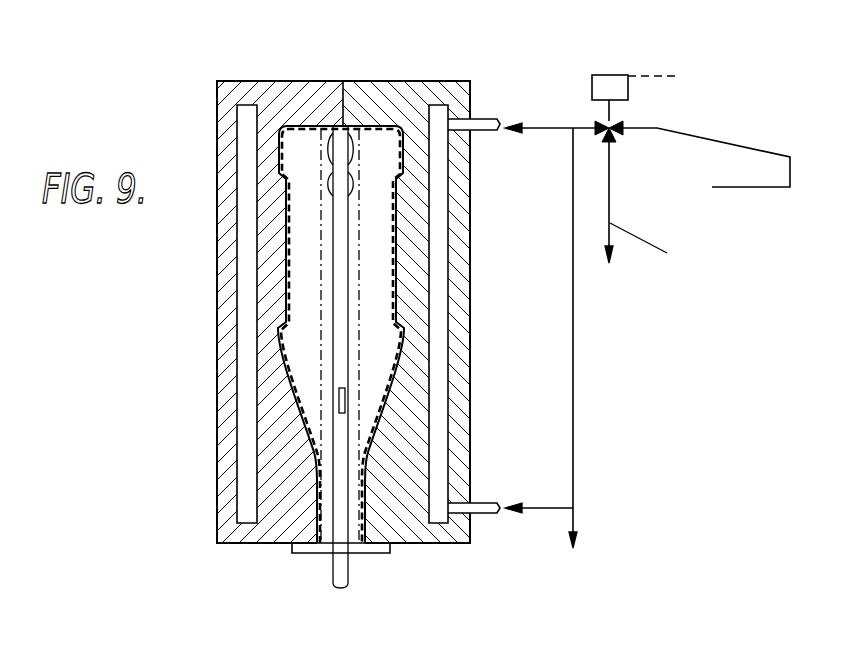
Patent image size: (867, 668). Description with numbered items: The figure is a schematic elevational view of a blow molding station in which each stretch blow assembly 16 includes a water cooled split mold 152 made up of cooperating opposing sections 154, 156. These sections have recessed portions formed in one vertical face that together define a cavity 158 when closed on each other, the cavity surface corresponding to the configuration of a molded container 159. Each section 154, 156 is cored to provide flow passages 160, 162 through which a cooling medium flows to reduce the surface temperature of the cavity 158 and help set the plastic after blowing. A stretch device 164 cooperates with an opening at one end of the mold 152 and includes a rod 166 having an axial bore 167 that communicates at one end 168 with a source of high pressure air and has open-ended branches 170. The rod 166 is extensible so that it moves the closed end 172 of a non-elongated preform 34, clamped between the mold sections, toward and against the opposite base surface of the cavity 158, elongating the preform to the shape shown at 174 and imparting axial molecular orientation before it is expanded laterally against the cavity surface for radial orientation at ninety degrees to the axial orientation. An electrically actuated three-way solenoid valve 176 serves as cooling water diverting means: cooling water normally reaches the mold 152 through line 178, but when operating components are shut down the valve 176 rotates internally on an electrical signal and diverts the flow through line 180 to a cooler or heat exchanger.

The stretch blow assembly 16 is at (150, 360).
The non-elongated preform 34 is at (350, 457).
The water cooled split mold 152 is at (255, 74).
The mold section 154 is at (286, 87).
The mold section 156 is at (392, 86).
The cavity 158 is at (405, 124).
The molded container 159 is at (407, 357).
The flow passage 160 is at (437, 307).
The flow passage 162 is at (245, 287).
The stretch device 164 is at (383, 586).
The rod 166 is at (343, 130).
The axial bore 167 is at (345, 398).
The end 168 is at (348, 568).
The open-ended branches 170 is at (356, 167).
The closed end 172 is at (323, 290).
The elongated preform shape 174 is at (360, 209).
The three-way solenoid valve 176 is at (608, 75).
The line 178 is at (577, 128).
The line 180 is at (610, 197).